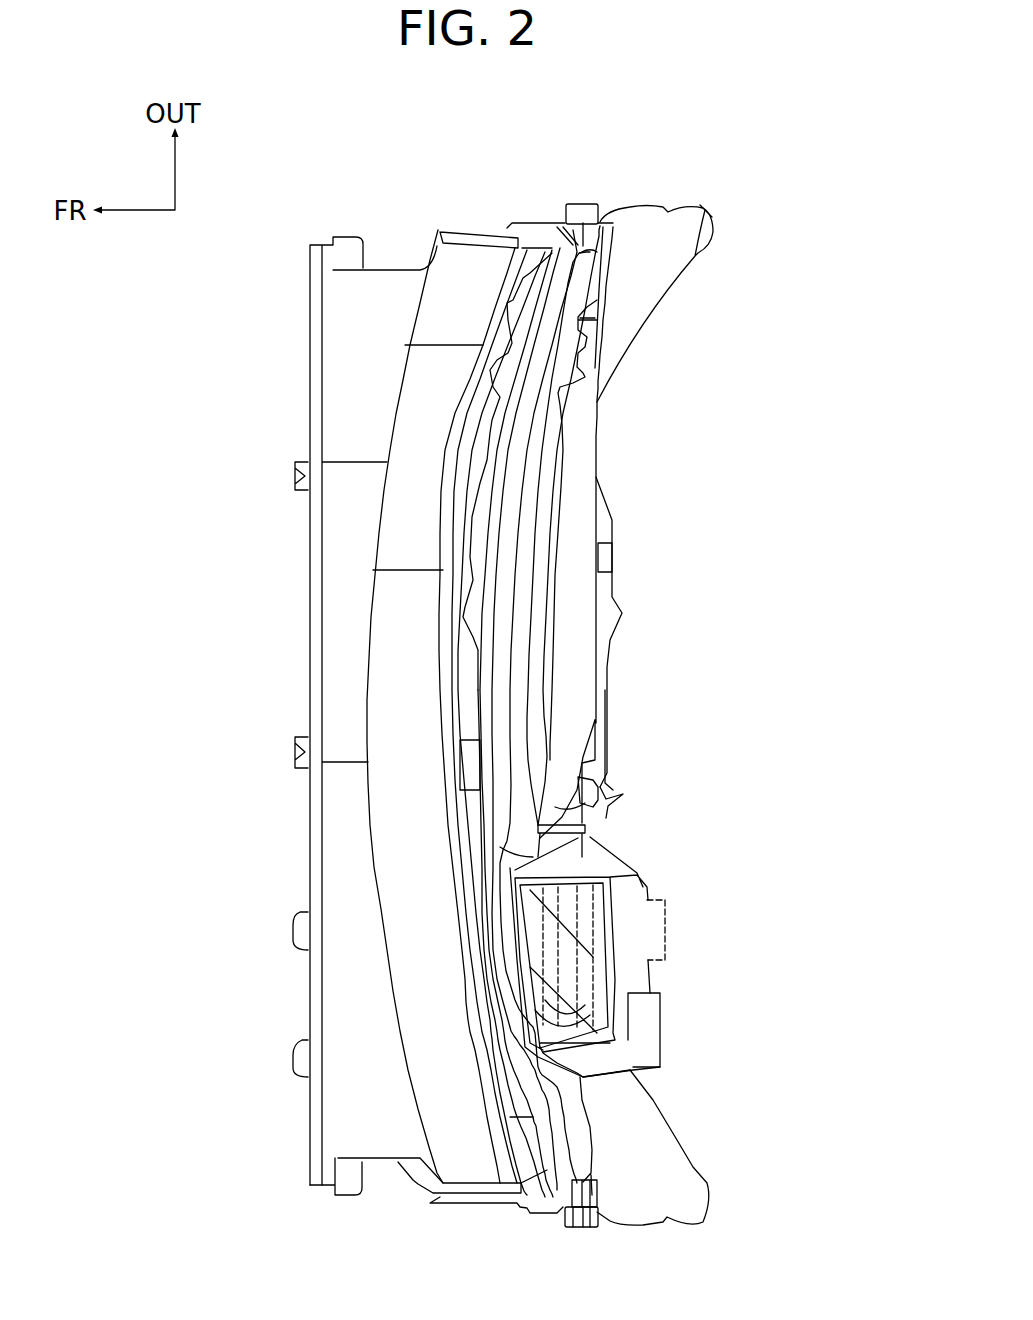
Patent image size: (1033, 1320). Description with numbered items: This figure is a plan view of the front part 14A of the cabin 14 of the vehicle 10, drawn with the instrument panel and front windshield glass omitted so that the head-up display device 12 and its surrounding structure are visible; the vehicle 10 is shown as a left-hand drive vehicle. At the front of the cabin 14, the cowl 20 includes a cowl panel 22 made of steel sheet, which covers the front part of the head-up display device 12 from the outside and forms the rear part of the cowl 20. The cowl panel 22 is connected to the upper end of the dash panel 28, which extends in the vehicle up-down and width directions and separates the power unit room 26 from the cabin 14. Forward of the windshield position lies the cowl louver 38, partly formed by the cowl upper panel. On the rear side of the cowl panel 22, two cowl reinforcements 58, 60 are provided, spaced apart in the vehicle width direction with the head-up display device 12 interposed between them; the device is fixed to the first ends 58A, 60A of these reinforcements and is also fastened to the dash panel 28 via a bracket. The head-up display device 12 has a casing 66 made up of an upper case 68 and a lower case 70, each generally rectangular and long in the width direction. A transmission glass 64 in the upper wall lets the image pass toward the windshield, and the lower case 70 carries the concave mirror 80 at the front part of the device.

The vehicle 10 is at (745, 163).
The head-up display device 12 is at (680, 915).
The cabin 14 is at (832, 511).
The front part of the cabin 14A is at (693, 520).
The cowl 20 is at (523, 222).
The cowl panel 22 is at (543, 857).
The power unit room 26 is at (208, 719).
The dash panel 28 is at (605, 632).
The cowl louver 38 is at (469, 255).
The cowl reinforcement 58 is at (695, 1164).
The first end of the cowl reinforcement 58A is at (610, 1102).
The cowl reinforcement 60 is at (597, 677).
The first end of the cowl reinforcement 60A is at (607, 803).
The transmission glass 64 is at (567, 960).
The casing 66 is at (662, 890).
The upper case 68 is at (662, 1040).
The lower case 70 is at (663, 1062).
The concave mirror 80 is at (550, 977).